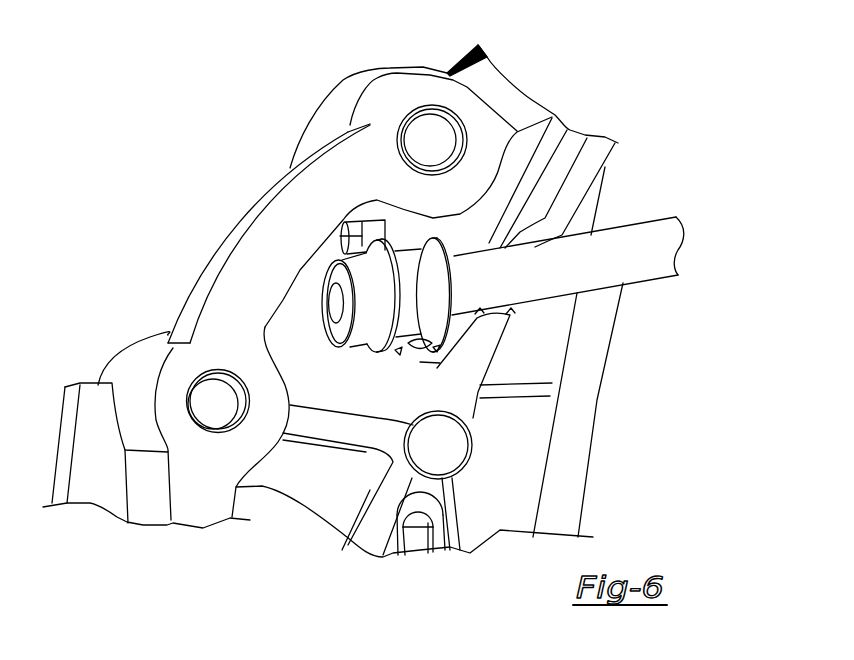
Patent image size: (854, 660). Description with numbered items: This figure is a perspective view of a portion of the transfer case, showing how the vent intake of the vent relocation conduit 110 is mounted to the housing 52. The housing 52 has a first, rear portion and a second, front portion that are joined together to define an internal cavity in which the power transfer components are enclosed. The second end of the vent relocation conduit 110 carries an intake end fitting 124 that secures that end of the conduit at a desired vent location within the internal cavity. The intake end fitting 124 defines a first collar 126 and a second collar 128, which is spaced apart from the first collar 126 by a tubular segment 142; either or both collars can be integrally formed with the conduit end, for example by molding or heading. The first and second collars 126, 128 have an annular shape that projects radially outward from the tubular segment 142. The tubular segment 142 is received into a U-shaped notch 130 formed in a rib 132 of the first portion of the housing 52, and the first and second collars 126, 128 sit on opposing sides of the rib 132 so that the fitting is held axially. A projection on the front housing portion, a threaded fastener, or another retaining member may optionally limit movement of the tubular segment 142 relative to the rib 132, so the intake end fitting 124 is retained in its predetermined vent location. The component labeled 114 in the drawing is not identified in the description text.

The housing 52 is at (186, 283).
The vent relocation conduit 110 is at (639, 228).
The bushing 114 is at (337, 310).
The intake end fitting 124 is at (357, 352).
The first collar 126 is at (367, 253).
The second collar 128 is at (438, 256).
The U-shaped notch 130 is at (428, 342).
The rib 132 is at (422, 362).
The tubular segment 142 is at (408, 275).